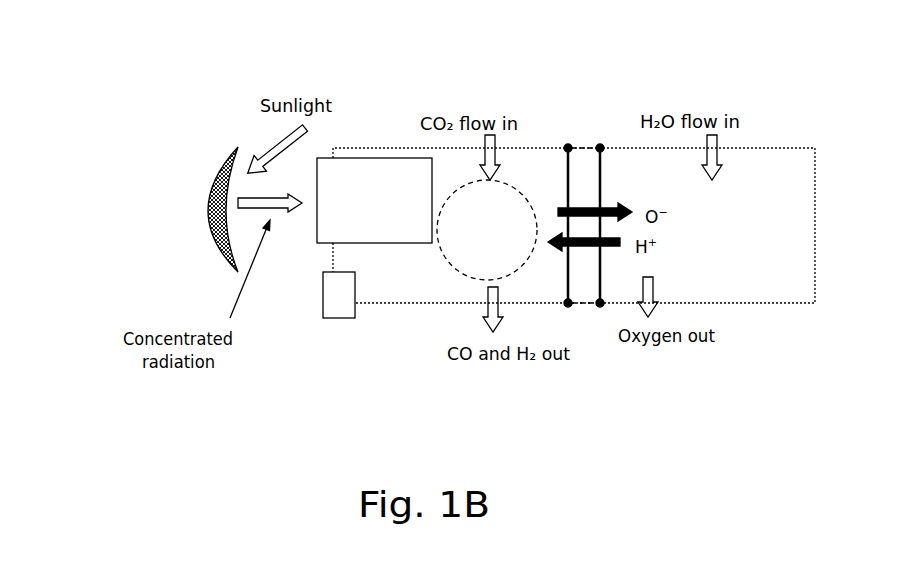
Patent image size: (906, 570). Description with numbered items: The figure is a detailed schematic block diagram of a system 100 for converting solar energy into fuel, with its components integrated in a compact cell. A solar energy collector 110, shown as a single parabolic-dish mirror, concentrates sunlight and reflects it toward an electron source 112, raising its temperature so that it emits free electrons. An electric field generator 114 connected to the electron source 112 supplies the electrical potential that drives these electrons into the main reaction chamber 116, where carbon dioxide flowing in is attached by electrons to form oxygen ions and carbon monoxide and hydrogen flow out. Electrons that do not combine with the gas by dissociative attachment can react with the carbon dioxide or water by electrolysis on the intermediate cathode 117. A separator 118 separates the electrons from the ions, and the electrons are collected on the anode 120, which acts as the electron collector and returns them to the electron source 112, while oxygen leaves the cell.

The system 100 is at (142, 46).
The solar energy collector 110 is at (189, 172).
The electron source device 112 is at (382, 120).
The electric field generator 114 is at (332, 296).
The main reaction chamber 116 is at (477, 242).
The intermediate cathode 117 is at (563, 184).
The separator 118 is at (588, 163).
The anode 120 is at (604, 318).